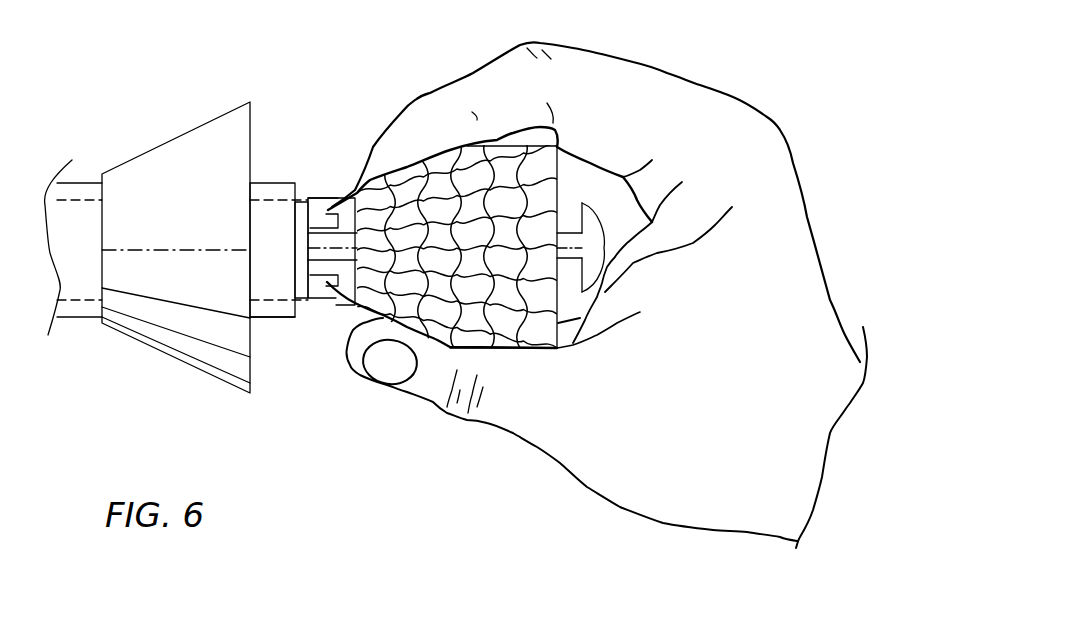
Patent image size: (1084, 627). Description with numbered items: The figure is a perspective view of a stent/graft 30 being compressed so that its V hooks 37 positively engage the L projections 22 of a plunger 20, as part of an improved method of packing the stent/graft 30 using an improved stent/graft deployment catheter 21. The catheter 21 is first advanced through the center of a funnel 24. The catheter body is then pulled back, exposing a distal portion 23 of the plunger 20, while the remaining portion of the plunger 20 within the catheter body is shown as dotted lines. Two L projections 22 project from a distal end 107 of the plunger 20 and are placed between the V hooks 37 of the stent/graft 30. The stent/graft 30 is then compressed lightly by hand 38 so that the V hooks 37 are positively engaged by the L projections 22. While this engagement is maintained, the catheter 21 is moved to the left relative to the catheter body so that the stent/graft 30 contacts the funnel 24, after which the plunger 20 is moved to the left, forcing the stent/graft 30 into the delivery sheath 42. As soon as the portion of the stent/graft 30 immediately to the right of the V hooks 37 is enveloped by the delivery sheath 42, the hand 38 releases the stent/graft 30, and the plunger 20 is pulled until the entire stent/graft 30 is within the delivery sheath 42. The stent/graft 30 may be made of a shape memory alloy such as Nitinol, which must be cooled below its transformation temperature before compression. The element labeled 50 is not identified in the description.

The stent/graft deployment catheter 21 is at (81, 171).
The funnel 24 is at (193, 130).
The plunger 20 is at (261, 198).
The delivery sheath 42 is at (270, 317).
The distal portion of the plunger 23 is at (299, 199).
The V hooks 37 is at (352, 205).
The distal end of the plunger 107 is at (315, 217).
The L projections 22 is at (322, 213).
The stent/graft 30 is at (557, 302).
The end cap disc 50 is at (597, 213).
The hand 38 is at (688, 78).